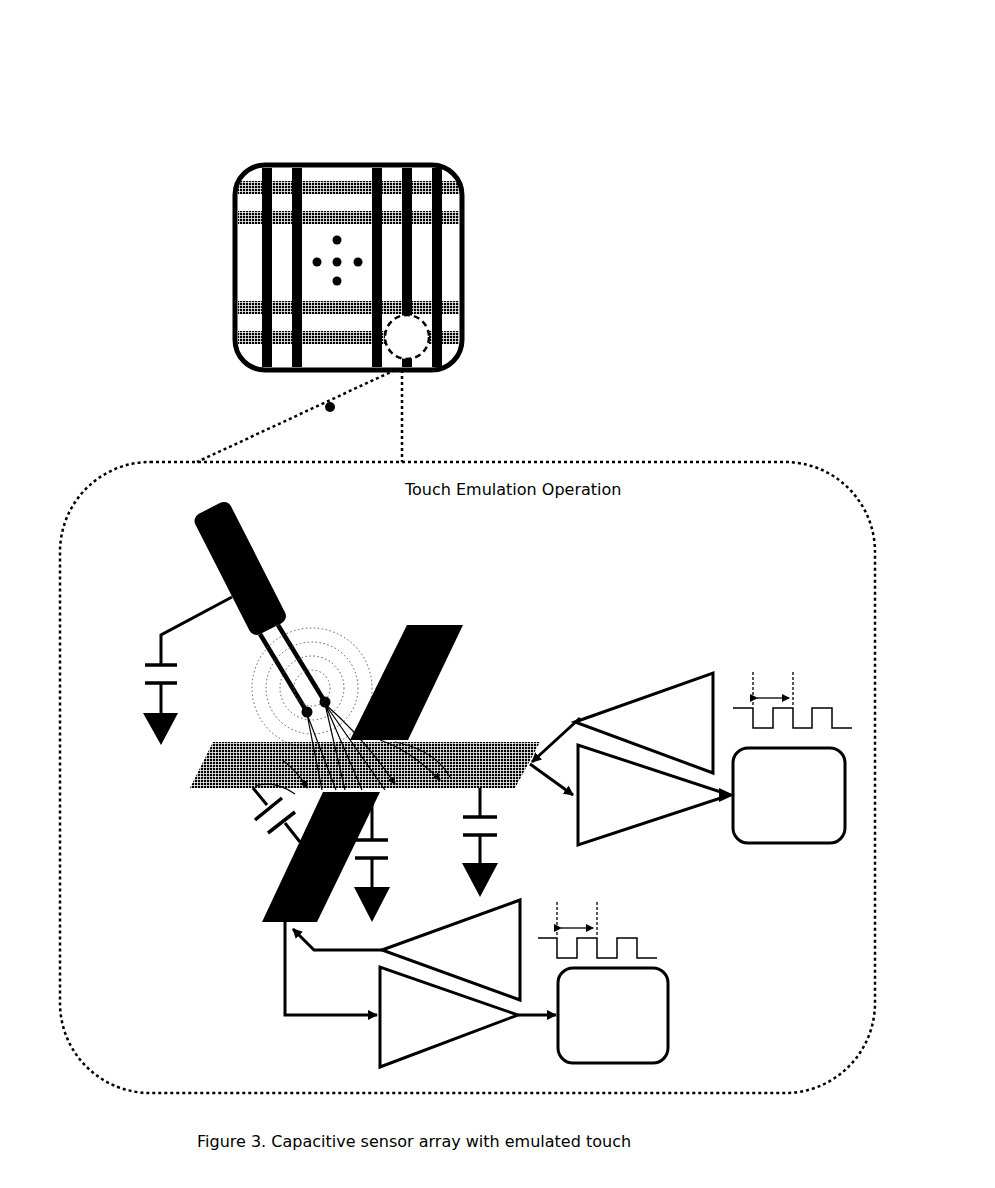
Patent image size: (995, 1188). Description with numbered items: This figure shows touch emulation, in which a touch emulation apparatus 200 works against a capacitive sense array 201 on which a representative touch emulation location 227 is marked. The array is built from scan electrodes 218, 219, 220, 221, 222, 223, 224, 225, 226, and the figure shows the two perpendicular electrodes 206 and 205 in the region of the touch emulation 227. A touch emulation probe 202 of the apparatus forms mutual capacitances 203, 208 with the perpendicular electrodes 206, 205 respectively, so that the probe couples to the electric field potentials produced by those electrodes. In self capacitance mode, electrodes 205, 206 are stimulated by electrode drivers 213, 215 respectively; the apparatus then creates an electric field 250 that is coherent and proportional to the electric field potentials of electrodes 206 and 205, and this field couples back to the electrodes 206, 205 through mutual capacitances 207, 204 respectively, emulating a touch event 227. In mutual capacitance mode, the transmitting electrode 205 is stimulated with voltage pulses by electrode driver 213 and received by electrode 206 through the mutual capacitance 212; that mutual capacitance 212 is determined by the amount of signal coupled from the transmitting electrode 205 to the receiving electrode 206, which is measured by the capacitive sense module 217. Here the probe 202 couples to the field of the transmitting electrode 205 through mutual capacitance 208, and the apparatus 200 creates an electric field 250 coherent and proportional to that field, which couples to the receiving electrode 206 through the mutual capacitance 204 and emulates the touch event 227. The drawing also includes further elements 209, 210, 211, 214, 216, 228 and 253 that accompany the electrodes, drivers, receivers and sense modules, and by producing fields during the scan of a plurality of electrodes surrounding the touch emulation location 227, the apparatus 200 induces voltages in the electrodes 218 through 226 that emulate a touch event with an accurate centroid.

The touch emulation apparatus 200 is at (228, 504).
The capacitive sense array 201 is at (275, 209).
The touch emulation probe 202 is at (302, 722).
The mutual capacitance 203 is at (275, 785).
The mutual capacitance 204 is at (304, 752).
The electrode 205 is at (470, 742).
The electrode 206 is at (456, 626).
The mutual capacitance 207 is at (417, 768).
The mutual capacitance 208 is at (371, 752).
The electrode capacitance C electrode 209 is at (388, 843).
The electrode capacitance C electrode 210 is at (497, 821).
The ground capacitance C ground 211 is at (178, 667).
The mutual capacitance 212 is at (271, 828).
The electrode driver 213 is at (686, 681).
The RX electrode receiver 214 is at (668, 822).
The electrode driver 215 is at (503, 907).
The RX electrode receiver 216 is at (455, 1047).
The capacitive sense module 217 is at (668, 970).
The electrode 218 is at (268, 50).
The electrode 219 is at (299, 50).
The electrode 220 is at (374, 43).
The electrode 221 is at (408, 43).
The electrode 222 is at (443, 43).
The electrode 223 is at (106, 187).
The electrode 224 is at (108, 217).
The electrode 225 is at (112, 304).
The electrode 226 is at (114, 336).
The touch emulation location 227 is at (418, 360).
The capacitive sense module 228 is at (788, 844).
The electric field 250 is at (333, 628).
The TX probe 253 is at (330, 700).